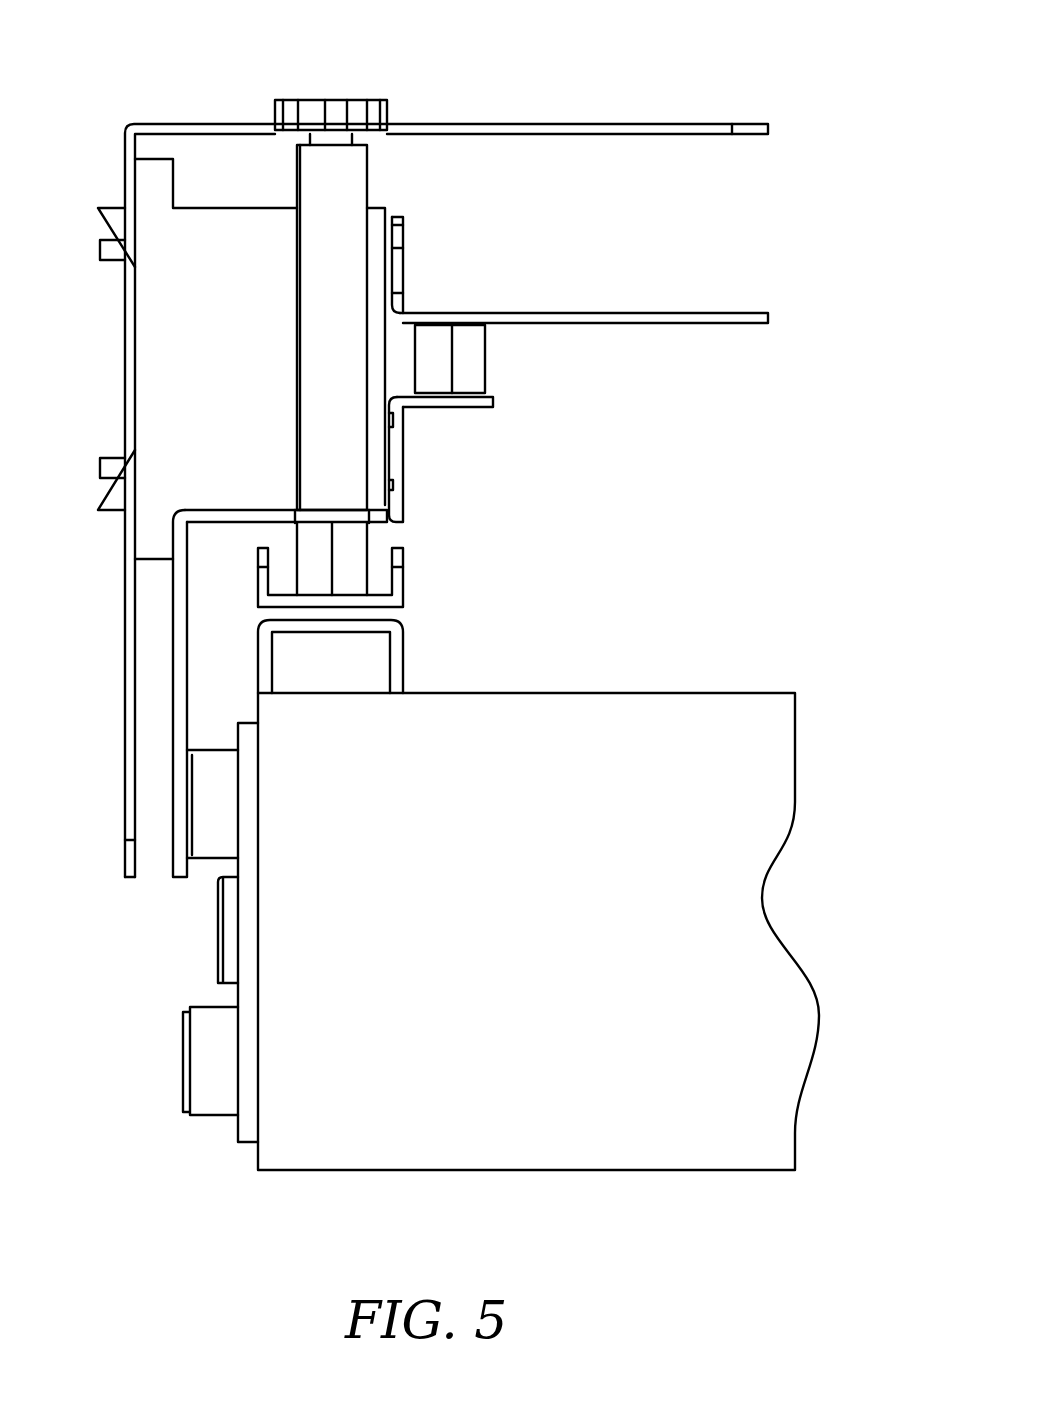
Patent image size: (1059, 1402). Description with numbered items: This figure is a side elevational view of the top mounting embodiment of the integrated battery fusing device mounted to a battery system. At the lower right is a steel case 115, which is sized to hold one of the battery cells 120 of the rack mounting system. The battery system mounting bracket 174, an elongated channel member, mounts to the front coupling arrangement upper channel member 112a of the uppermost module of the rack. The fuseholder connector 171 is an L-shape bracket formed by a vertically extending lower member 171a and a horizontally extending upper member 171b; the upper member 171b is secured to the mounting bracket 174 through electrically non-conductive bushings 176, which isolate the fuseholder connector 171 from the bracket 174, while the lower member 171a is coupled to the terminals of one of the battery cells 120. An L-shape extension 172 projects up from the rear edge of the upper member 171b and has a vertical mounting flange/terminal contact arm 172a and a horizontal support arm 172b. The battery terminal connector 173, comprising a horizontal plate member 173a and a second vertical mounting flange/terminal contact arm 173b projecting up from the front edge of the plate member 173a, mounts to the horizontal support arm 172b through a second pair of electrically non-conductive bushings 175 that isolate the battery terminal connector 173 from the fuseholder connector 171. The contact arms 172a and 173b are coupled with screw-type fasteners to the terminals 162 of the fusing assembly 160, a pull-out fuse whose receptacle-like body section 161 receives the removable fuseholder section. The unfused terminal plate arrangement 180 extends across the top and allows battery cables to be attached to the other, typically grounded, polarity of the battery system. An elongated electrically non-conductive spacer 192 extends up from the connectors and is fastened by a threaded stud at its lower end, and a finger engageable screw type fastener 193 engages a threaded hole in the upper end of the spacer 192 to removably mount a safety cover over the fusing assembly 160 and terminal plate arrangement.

The upper channel member 112a is at (410, 645).
The steel case 115 is at (548, 693).
The battery cells 120 is at (238, 995).
The fusing assembly 160 is at (225, 205).
The body section 161 is at (190, 347).
The terminals 162 is at (403, 240).
The fuseholder connector 171 is at (263, 730).
The vertically extending lower member 171a is at (175, 698).
The horizontally extending upper member 171b is at (375, 528).
The L-shape extension 172 is at (494, 451).
The vertical mounting flange/terminal contact arm 172a is at (405, 487).
The horizontal support arm 172b is at (460, 410).
The battery terminal connector 173 is at (580, 296).
The horizontal plate member 173a is at (567, 312).
The second vertical mounting flange/terminal contact arm 173b is at (405, 268).
The battery system mounting bracket 174 is at (405, 580).
The bushings 175 is at (487, 360).
The bushings 176 is at (295, 540).
The unfused terminal plate arrangement 180 is at (508, 125).
The spacers 192 is at (368, 190).
The finger engageable screw type fasteners 193 is at (345, 98).